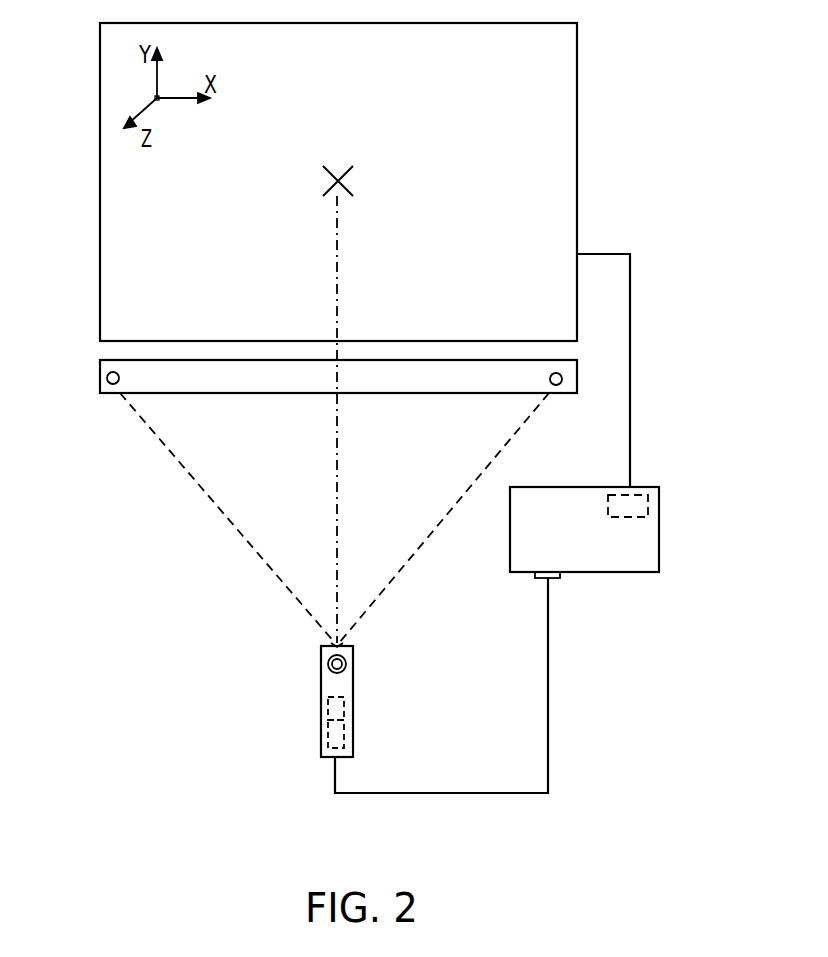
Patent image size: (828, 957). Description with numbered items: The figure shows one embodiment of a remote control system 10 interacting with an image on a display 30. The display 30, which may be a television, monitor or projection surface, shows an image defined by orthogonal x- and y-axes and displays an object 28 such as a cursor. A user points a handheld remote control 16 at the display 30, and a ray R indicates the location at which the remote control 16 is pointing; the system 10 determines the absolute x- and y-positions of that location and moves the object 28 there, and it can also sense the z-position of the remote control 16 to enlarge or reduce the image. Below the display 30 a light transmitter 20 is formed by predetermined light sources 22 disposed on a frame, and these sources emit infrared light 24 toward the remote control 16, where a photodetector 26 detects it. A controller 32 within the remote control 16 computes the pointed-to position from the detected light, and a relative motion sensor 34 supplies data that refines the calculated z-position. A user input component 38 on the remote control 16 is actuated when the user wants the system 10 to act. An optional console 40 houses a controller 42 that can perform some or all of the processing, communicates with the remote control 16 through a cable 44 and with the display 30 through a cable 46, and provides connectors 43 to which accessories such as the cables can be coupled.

The remote control system 10 is at (68, 614).
The remote control 16 is at (353, 705).
The light transmitter 20 is at (280, 382).
The predetermined light sources 22 is at (111, 385).
The infrared light 24 is at (200, 382).
The photodetector 26 is at (340, 643).
The object 28 is at (338, 178).
The display 30 is at (105, 165).
The controller 32 is at (322, 735).
The relative motion sensor 34 is at (322, 703).
The user input component 38 is at (328, 664).
The console 40 is at (651, 556).
The controller 42 is at (651, 507).
The connectors 43 is at (550, 579).
The cable 44 is at (548, 765).
The cable 46 is at (630, 300).
The ray R is at (339, 497).